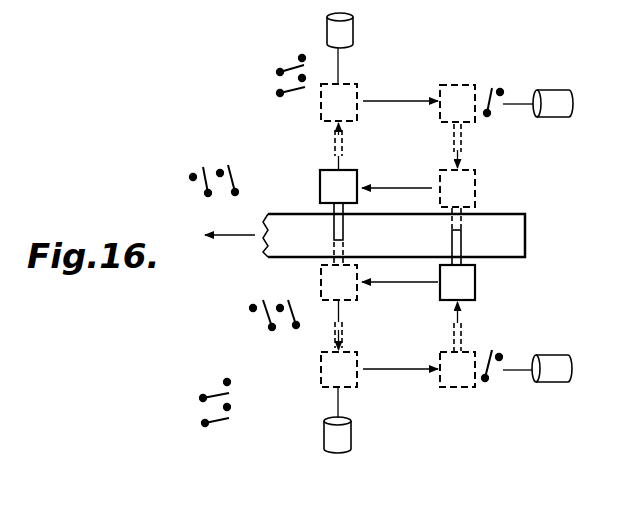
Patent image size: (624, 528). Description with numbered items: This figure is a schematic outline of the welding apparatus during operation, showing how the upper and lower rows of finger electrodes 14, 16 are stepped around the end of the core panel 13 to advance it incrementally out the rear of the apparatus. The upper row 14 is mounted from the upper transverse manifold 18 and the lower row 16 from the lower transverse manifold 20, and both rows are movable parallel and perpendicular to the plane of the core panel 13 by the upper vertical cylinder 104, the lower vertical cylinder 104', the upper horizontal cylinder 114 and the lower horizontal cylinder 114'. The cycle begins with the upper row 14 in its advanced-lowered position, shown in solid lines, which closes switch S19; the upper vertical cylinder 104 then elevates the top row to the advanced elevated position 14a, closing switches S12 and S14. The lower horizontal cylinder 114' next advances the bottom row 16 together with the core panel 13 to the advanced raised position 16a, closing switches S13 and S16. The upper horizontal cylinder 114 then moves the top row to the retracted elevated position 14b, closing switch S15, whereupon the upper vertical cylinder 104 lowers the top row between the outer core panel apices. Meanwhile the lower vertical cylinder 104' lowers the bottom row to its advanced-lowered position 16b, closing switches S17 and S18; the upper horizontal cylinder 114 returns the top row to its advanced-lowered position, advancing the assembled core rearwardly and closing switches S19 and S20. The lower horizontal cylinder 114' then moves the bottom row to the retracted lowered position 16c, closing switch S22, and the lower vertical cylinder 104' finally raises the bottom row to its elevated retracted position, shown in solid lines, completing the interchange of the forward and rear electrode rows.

The core panel 13 is at (520, 240).
The upper row of finger electrodes 14 is at (342, 227).
The lower row of finger electrodes 16 is at (461, 242).
The upper transverse manifold 18 is at (324, 172).
The lower transverse manifold 20 is at (470, 285).
The advanced elevated position 14a is at (320, 107).
The retracted elevated position 14b is at (462, 85).
The advanced raised position 16a is at (320, 277).
The advanced-lowered position 16b is at (322, 375).
The retracted lowered position 16c is at (457, 380).
The upper vertical cylinder 104 is at (364, 48).
The lower vertical cylinder 104' is at (362, 420).
The upper horizontal cylinder 114 is at (549, 115).
The lower horizontal cylinder 114' is at (544, 382).
The switch S12 is at (278, 92).
The switch S13 is at (287, 329).
The switch S14 is at (280, 70).
The switch S15 is at (488, 95).
The switch S16 is at (256, 322).
The switch S17 is at (203, 402).
The switch S18 is at (205, 427).
The switch S19 is at (236, 190).
The switch S20 is at (195, 183).
The switch S22 is at (501, 361).